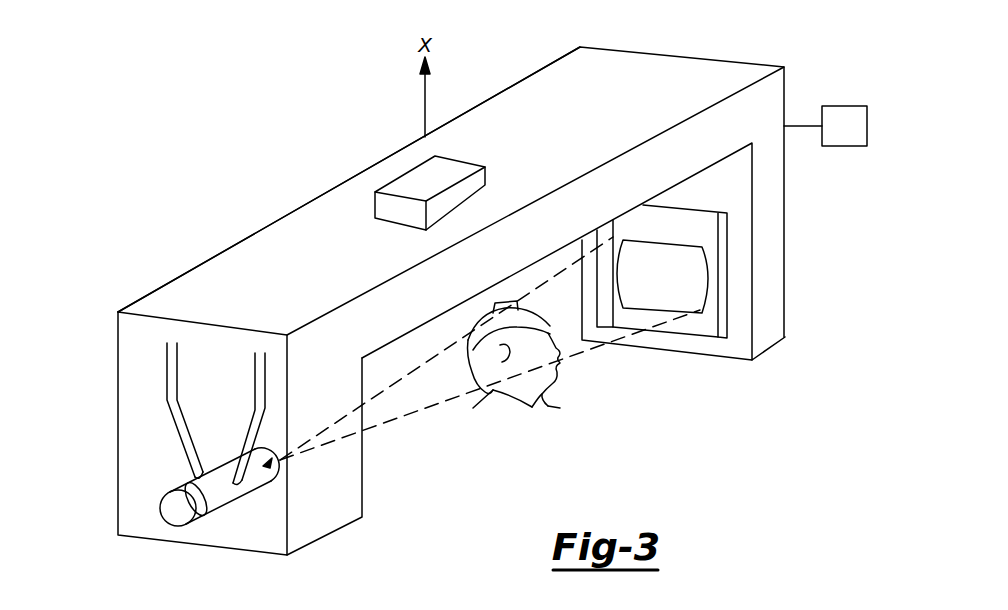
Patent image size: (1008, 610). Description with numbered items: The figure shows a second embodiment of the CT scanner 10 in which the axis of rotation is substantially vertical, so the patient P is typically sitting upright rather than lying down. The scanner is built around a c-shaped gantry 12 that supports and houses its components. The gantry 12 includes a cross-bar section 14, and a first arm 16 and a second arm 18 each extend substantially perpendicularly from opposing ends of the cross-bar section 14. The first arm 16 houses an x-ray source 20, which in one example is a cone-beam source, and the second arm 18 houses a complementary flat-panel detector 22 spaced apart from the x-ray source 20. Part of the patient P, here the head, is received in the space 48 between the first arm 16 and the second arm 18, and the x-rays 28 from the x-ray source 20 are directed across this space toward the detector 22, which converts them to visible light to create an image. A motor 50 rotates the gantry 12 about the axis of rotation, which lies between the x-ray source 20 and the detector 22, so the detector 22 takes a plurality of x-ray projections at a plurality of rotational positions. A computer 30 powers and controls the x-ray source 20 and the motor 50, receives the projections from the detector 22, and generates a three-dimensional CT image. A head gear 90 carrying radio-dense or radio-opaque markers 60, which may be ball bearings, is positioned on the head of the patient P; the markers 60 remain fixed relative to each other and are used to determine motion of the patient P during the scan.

The CT scanner 10 is at (341, 68).
The gantry 12 is at (632, 51).
The cross-bar section 14 is at (207, 282).
The first arm 16 is at (115, 372).
The second arm 18 is at (785, 278).
The x-ray source 20 is at (170, 512).
The flat-panel detector 22 is at (717, 231).
The x-rays 28 is at (430, 408).
The computer 30 is at (825, 126).
The space 48 is at (413, 457).
The motor 50 is at (407, 183).
The markers 60 is at (530, 333).
The head gear 90 is at (483, 323).
The patient P is at (560, 408).